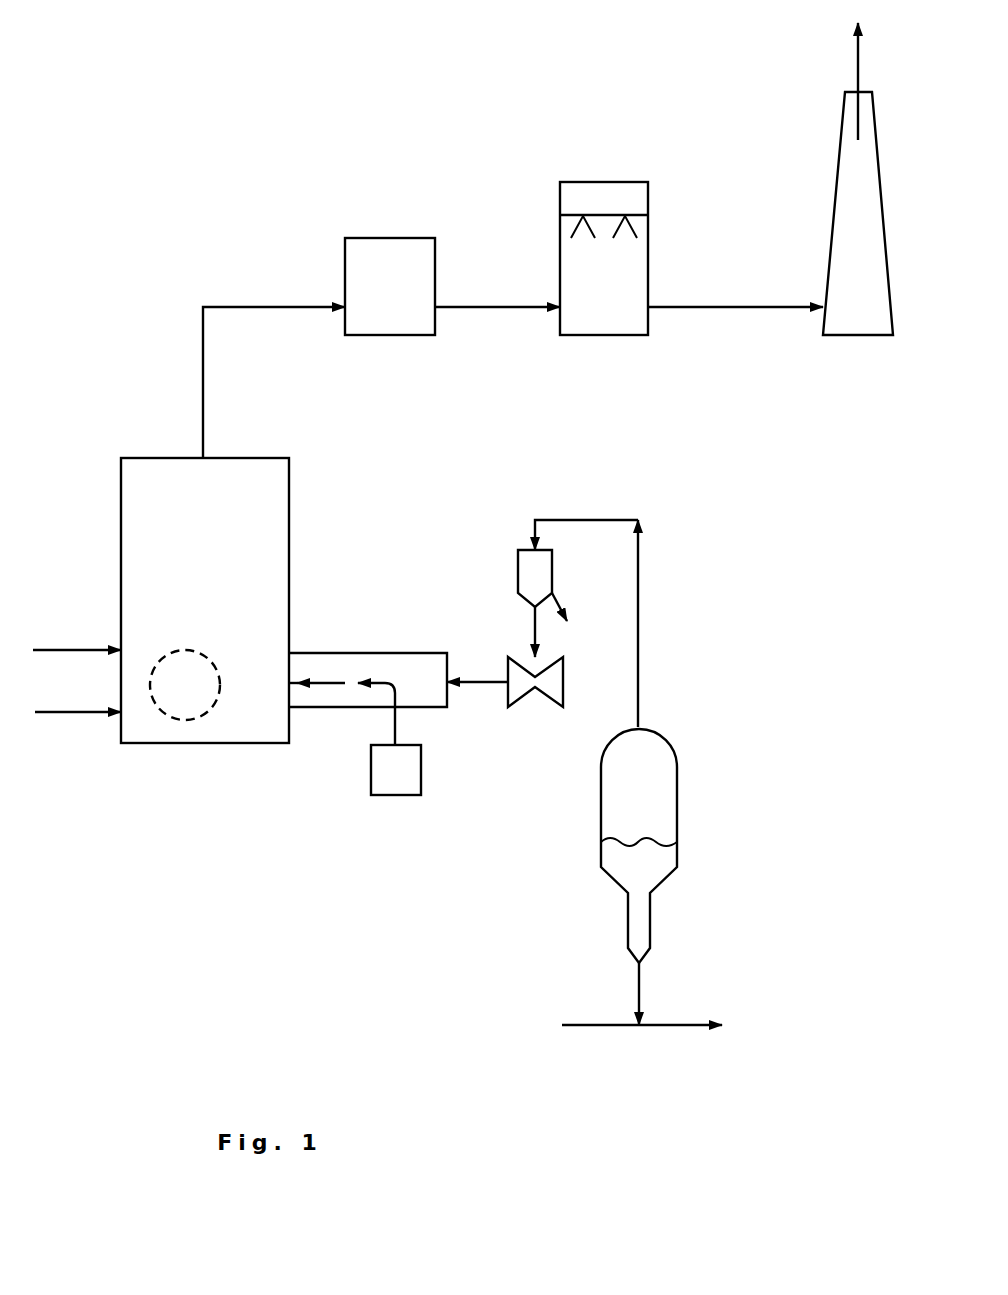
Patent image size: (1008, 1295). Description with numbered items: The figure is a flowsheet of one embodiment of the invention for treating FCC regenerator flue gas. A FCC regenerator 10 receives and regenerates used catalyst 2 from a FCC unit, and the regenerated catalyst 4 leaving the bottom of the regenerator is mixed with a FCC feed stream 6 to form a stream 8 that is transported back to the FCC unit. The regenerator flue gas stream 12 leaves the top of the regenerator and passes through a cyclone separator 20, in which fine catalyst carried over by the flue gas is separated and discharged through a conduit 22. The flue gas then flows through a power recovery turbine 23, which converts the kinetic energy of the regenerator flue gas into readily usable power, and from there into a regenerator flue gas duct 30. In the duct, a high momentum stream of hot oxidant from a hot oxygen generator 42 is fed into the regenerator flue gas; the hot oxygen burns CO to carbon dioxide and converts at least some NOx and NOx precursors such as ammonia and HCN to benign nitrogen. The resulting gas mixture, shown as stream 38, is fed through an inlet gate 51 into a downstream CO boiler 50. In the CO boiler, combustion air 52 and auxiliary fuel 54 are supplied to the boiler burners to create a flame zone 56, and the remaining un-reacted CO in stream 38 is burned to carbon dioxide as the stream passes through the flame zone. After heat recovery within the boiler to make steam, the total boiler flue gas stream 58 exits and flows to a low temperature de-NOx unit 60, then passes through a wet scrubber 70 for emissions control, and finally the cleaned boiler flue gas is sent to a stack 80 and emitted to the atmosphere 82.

The used catalyst 2 is at (632, 882).
The regenerated catalyst 4 is at (640, 988).
The FCC feed stream 6 is at (585, 1025).
The stream 8 is at (693, 1025).
The FCC regenerator 10 is at (623, 795).
The regenerator flue gas stream 12 is at (615, 520).
The cyclone separator 20 is at (518, 575).
The conduit 22 is at (572, 618).
The power recovery turbine 23 is at (553, 707).
The regenerator flue gas duct 30 is at (397, 653).
The stream 38 is at (327, 681).
The hot oxygen generator 42 is at (382, 785).
The CO boiler 50 is at (190, 566).
The inlet gate 51 is at (290, 683).
The combustion air 52 is at (52, 650).
The auxiliary fuel 54 is at (78, 713).
The flame zone 56 is at (185, 685).
The total boiler flue gas stream 58 is at (247, 307).
The low temperature de-NOx unit 60 is at (378, 307).
The wet scrubber 70 is at (590, 299).
The stack 80 is at (848, 312).
The atmosphere 82 is at (857, 78).